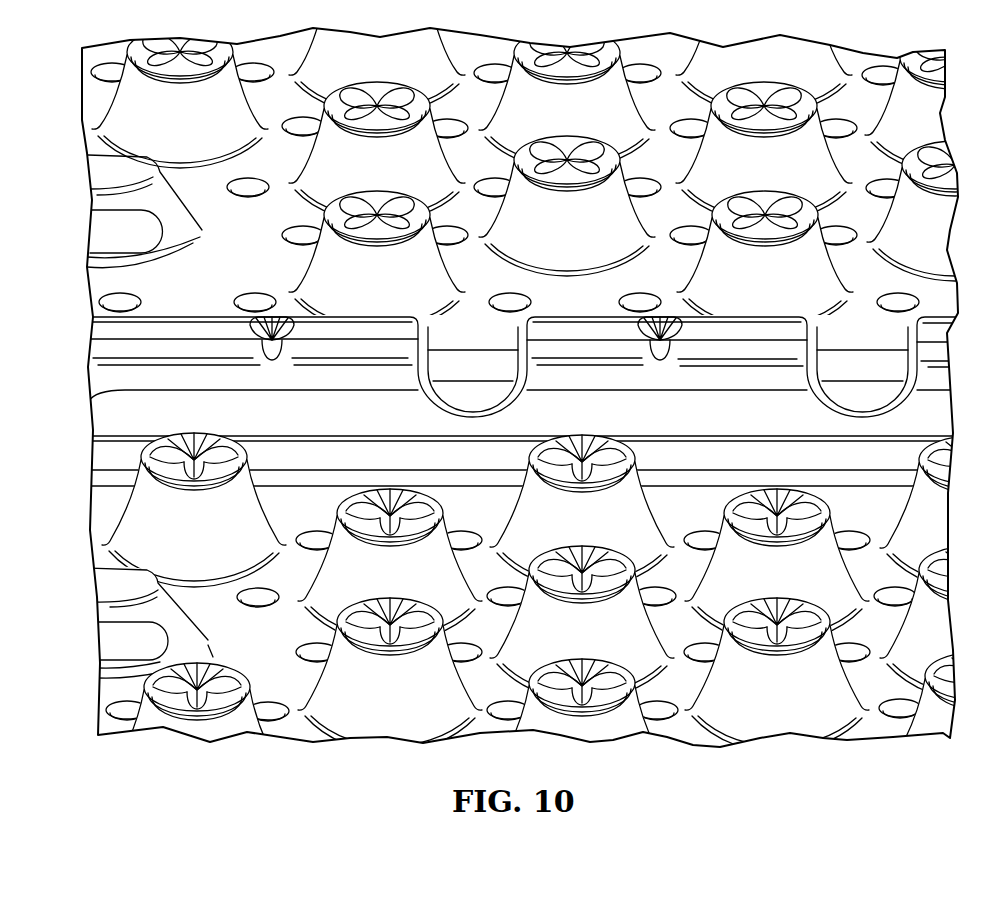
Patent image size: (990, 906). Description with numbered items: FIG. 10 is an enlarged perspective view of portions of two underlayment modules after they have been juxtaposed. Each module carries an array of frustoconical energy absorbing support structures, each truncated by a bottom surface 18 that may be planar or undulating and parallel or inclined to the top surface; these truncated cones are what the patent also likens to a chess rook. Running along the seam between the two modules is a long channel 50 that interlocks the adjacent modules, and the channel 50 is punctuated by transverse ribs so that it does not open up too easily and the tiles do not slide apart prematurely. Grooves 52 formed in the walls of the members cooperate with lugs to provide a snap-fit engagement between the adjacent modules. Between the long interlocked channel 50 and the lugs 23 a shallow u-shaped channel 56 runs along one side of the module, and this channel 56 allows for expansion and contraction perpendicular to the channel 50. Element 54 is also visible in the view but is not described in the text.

The bottom surface 18 is at (392, 212).
The lug 23 is at (316, 540).
The long channel 50 is at (190, 318).
The groove 52 is at (440, 383).
The rib side wall 54 is at (787, 331).
The shallow u-shaped channel 56 is at (437, 480).